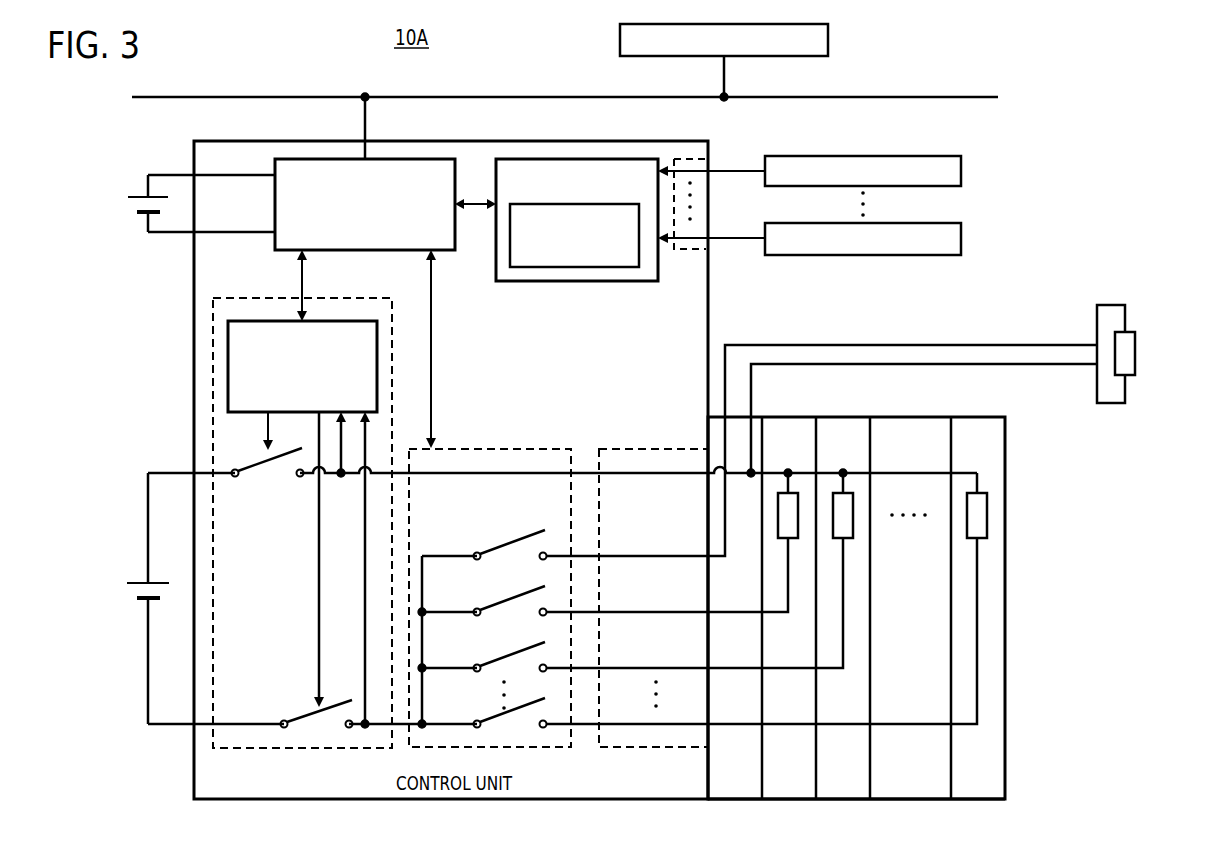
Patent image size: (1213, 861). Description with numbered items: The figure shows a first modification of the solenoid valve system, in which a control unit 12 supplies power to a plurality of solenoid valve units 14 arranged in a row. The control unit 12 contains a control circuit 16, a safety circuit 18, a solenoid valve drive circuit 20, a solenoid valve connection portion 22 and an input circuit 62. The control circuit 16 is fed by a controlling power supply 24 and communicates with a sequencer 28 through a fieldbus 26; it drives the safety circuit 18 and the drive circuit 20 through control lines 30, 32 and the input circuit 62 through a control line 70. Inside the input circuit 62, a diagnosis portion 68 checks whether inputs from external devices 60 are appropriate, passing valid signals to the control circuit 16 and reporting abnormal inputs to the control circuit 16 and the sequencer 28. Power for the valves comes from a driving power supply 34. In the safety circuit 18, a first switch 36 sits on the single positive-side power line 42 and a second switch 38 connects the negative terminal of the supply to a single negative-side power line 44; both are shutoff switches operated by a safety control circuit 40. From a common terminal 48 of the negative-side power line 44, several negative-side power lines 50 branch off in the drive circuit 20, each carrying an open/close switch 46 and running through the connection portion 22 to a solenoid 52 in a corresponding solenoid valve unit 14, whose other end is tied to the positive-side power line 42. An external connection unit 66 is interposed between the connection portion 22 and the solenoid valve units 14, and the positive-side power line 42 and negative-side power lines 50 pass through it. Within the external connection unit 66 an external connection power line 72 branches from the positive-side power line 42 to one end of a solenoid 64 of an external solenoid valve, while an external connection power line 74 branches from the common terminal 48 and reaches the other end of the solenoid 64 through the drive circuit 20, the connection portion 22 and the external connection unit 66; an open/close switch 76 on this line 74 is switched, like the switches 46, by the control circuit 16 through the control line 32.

The control unit 12 is at (668, 140).
The solenoid valve units 14 is at (795, 417).
The control circuit 16 is at (398, 138).
The safety circuit 18 is at (264, 297).
The solenoid valve drive circuit 20 is at (522, 447).
The solenoid valve connection portion 22 is at (662, 447).
The controlling power supply 24 is at (127, 201).
The fieldbus 26 is at (494, 97).
The sequencer 28 is at (828, 40).
The control line 30 is at (304, 284).
The control line 32 is at (433, 341).
The driving power supply 34 is at (127, 588).
The first switch 36 is at (270, 480).
The second switch 38 is at (313, 727).
The safety control circuit 40 is at (357, 321).
The positive-side power line 42 is at (470, 470).
The negative-side power line 44 is at (376, 728).
The open/close switches 46 is at (507, 602).
The common terminal 48 is at (425, 722).
The negative-side power lines 50 is at (627, 612).
The solenoid 52 is at (777, 519).
The external devices 60 is at (961, 171).
The input circuit 62 is at (548, 159).
The solenoid 64 is at (1135, 353).
The external connection unit 66 is at (735, 800).
The diagnosis portion 68 is at (565, 281).
The control line 70 is at (475, 207).
The external connection power line 72 is at (1053, 366).
The external connection power line 74 is at (945, 345).
The open/close switch 76 is at (505, 543).